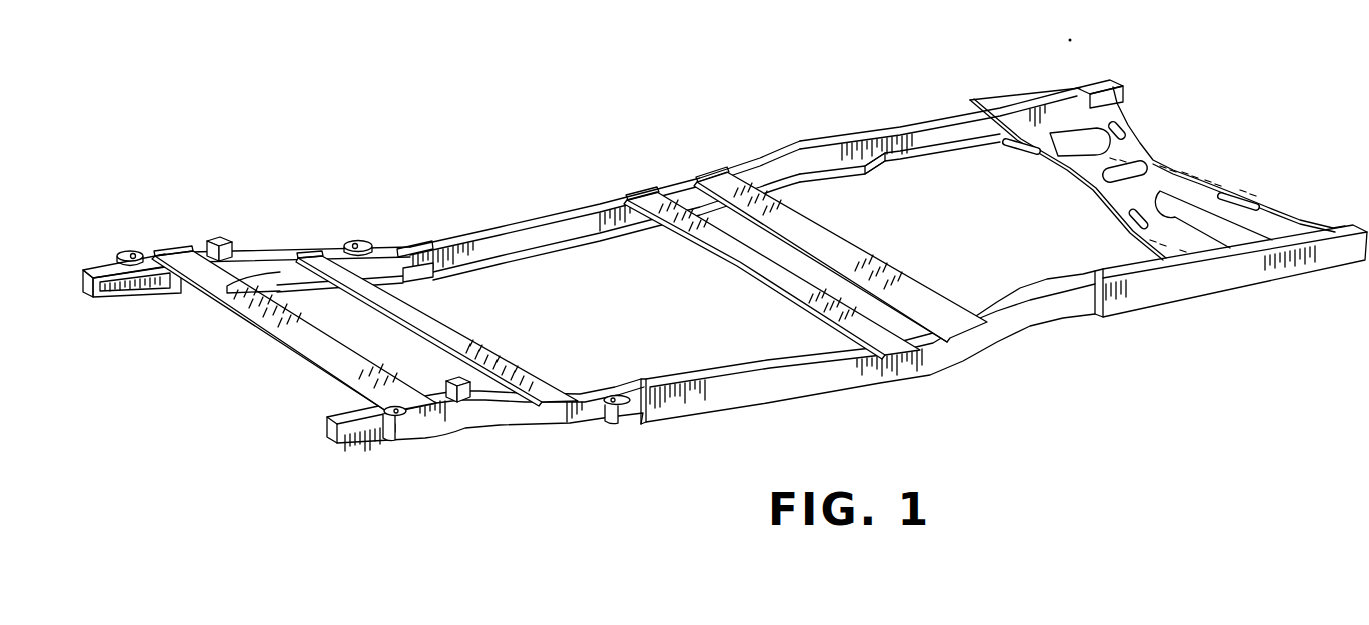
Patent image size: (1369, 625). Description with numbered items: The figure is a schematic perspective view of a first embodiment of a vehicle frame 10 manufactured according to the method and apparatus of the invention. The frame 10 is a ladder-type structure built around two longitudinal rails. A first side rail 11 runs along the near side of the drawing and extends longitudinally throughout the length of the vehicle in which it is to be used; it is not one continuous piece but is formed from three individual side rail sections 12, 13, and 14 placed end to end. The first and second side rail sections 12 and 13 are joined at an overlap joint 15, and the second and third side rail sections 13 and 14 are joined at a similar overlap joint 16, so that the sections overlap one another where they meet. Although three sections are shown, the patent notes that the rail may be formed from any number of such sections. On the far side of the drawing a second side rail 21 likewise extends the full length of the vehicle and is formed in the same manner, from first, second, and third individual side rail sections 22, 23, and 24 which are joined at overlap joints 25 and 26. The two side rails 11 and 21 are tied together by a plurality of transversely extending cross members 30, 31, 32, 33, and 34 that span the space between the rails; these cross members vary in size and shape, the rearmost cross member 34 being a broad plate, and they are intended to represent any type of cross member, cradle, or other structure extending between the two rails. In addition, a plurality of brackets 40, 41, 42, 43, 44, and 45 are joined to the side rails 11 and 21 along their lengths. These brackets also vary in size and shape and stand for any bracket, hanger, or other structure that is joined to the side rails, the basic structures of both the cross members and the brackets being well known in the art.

The vehicle frame 10 is at (538, 108).
The first side rail 11 is at (720, 440).
The first side rail section 12 is at (446, 437).
The second side rail section 13 is at (818, 385).
The third side rail section 14 is at (1150, 282).
The overlap joint 15 is at (645, 372).
The overlap joint 16 is at (1080, 260).
The second side rail 21 is at (470, 194).
The first side rail section 22 is at (298, 250).
The second side rail section 23 is at (571, 216).
The third side rail section 24 is at (898, 126).
The overlap joint 25 is at (434, 285).
The overlap joint 26 is at (878, 182).
The cross member 30 is at (312, 347).
The cross member 31 is at (425, 322).
The cross member 32 is at (745, 263).
The cross member 33 is at (830, 241).
The cross member 34 is at (1142, 156).
The bracket 40 is at (130, 250).
The bracket 41 is at (215, 240).
The bracket 42 is at (352, 241).
The bracket 43 is at (392, 440).
The bracket 44 is at (462, 400).
The bracket 45 is at (617, 418).